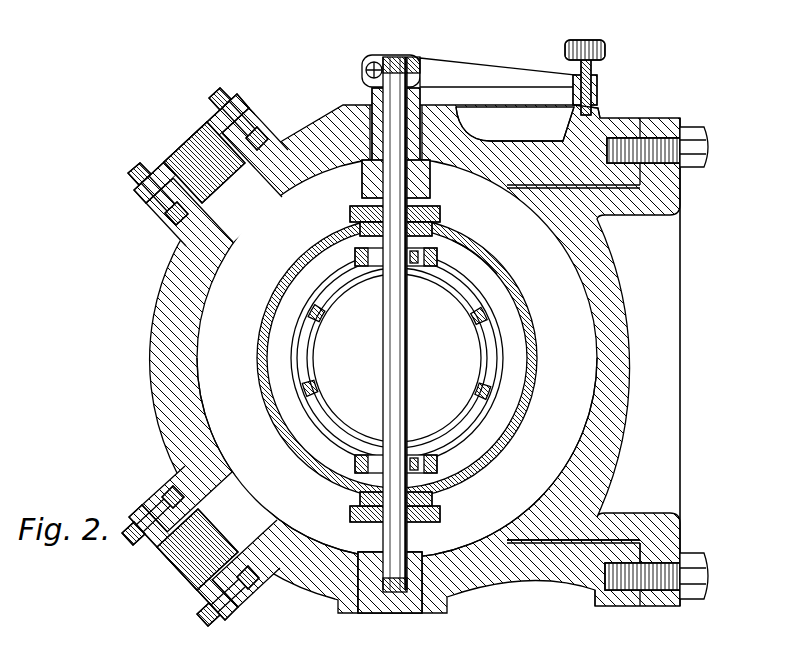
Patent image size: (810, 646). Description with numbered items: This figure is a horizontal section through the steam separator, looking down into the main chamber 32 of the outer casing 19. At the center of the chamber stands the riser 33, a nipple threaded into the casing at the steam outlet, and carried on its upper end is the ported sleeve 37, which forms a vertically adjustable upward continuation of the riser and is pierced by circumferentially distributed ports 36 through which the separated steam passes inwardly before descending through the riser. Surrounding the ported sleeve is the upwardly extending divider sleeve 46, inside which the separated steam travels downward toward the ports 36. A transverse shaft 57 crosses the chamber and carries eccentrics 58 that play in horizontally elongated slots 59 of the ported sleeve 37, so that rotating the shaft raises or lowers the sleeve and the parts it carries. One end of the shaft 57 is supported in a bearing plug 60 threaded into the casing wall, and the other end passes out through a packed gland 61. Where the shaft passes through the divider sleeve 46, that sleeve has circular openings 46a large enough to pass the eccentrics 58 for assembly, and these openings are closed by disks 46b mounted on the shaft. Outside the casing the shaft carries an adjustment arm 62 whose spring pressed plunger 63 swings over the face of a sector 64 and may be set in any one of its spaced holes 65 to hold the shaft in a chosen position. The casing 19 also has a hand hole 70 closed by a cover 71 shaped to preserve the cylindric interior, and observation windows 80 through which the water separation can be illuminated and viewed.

The outer casing 19 is at (307, 128).
The main chamber 32 is at (397, 458).
The riser 33 is at (302, 348).
The ports 36 is at (327, 288).
The ported sleeve 37 is at (518, 318).
The sleeve 46 is at (532, 406).
The circular openings 46a is at (434, 230).
The disks 46b is at (442, 212).
The transverse shaft 57 is at (396, 52).
The eccentrics 58 is at (415, 266).
The horizontally elongated slots 59 is at (380, 266).
The bearing plug 60 is at (420, 562).
The packed gland 61 is at (428, 166).
The adjustment arm 62 is at (488, 73).
The spring pressed plunger 63 is at (597, 92).
The sector 64 is at (569, 113).
The holes 65 is at (585, 138).
The hand hole 70 is at (505, 545).
The cover 71 is at (623, 367).
The observation windows 80 is at (196, 144).